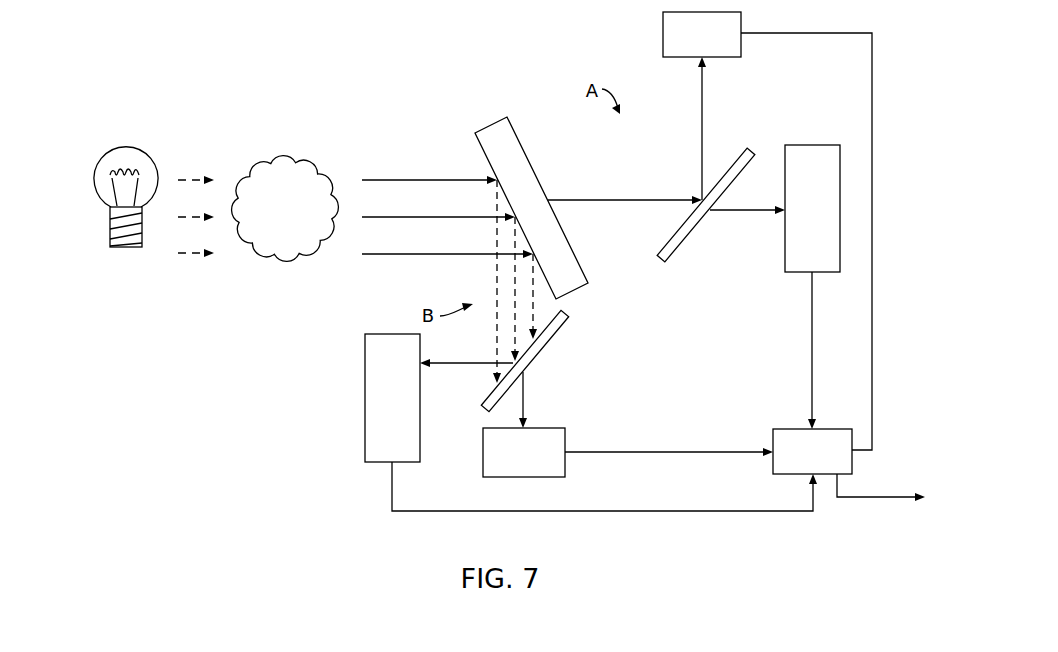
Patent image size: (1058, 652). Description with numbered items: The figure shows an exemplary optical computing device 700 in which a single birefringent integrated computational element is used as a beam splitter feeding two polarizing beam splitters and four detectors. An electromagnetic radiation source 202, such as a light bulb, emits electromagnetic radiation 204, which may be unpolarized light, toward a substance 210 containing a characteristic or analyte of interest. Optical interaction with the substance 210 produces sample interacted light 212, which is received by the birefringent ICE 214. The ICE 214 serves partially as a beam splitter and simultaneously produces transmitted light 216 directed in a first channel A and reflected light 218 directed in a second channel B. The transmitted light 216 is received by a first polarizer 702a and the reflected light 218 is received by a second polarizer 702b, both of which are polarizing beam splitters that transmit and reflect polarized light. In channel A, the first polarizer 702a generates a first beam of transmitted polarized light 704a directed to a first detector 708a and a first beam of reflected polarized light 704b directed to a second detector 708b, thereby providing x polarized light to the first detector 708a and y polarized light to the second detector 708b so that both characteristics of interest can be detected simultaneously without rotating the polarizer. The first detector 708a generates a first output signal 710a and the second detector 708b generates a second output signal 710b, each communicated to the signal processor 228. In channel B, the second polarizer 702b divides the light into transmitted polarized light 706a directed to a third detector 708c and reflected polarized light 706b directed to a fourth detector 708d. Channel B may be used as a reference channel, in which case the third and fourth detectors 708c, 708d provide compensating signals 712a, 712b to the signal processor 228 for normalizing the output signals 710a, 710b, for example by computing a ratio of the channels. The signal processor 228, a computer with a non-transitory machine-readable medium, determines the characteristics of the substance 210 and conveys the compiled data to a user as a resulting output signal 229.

The optical computing device 700 is at (525, 56).
The electromagnetic radiation source 202 is at (113, 145).
The electromagnetic radiation 204 is at (198, 255).
The substance 210 is at (285, 209).
The sample interacted light 212 is at (383, 256).
The birefringent ICE 214 is at (493, 130).
The transmitted light 216 is at (607, 198).
The reflected light 218 is at (495, 268).
The first polarizer 702a is at (677, 253).
The second polarizer 702b is at (567, 323).
The transmitted polarized light 704a is at (757, 211).
The reflected polarized light 704b is at (702, 100).
The transmitted polarized light 706a is at (523, 397).
The reflected polarized light 706b is at (465, 367).
The first detector 708a is at (812, 208).
The second detector 708b is at (702, 34).
The third detector 708c is at (524, 452).
The fourth detector 708d is at (392, 398).
The first output signal 710a is at (812, 350).
The second output signal 710b is at (872, 223).
The compensating signal 712a is at (660, 451).
The compensating signal 712b is at (623, 510).
The signal processor 228 is at (812, 451).
The resulting output signal 229 is at (892, 495).